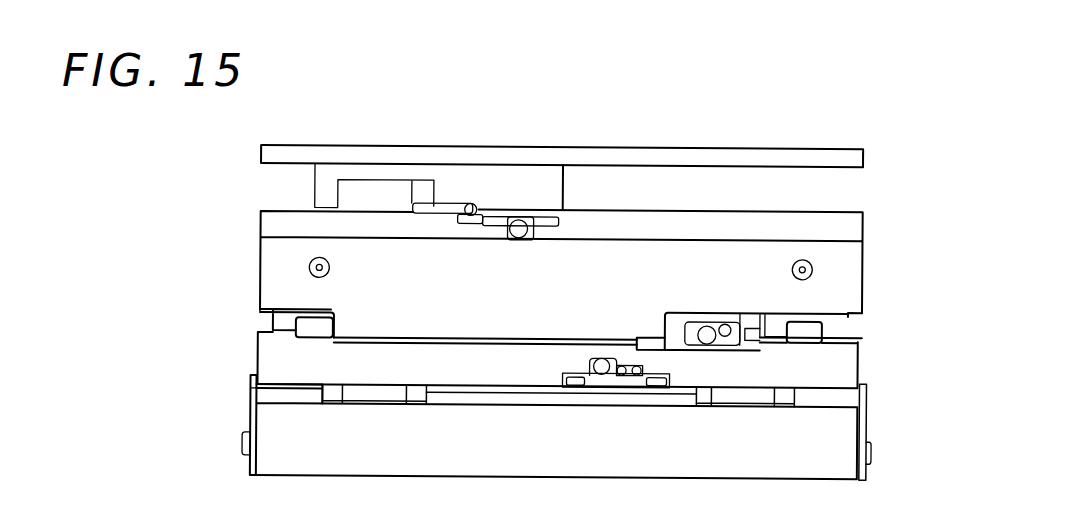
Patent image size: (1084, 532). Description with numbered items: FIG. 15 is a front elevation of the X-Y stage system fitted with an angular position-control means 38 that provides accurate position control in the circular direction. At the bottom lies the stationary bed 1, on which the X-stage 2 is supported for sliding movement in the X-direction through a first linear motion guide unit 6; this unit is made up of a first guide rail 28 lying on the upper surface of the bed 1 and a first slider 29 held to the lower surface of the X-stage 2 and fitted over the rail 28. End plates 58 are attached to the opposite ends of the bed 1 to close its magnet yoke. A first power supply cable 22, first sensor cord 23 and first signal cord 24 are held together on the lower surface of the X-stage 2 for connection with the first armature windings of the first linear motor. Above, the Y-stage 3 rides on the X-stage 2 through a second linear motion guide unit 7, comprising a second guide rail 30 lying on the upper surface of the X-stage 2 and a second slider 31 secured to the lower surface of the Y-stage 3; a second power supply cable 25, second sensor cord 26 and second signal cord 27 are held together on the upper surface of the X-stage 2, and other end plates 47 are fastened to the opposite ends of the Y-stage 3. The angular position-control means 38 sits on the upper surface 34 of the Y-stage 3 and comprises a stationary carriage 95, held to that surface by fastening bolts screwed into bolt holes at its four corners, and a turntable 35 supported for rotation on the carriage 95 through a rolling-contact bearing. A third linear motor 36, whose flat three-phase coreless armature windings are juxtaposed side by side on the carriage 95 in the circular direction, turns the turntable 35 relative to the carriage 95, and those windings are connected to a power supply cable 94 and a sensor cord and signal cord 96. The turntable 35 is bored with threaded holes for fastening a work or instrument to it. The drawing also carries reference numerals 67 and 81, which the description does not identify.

The stationary bed 1 is at (455, 455).
The X-stage 2 is at (330, 366).
The Y-stage 3 is at (826, 274).
The first linear motion guide unit 6 is at (349, 401).
The second linear motion guide unit 7 is at (268, 322).
The first power supply cable 22 is at (600, 372).
The first sensor cord 23 is at (621, 372).
The first signal cord 24 is at (638, 372).
The second power supply cable 25 is at (700, 327).
The second sensor cord 26 is at (722, 322).
The second signal cord 27 is at (742, 323).
The first guide rail 28 is at (523, 401).
The first slider 29 is at (374, 399).
The second guide rail 30 is at (312, 329).
The second slider 31 is at (272, 310).
The upper surface of the Y-stage 34 is at (634, 236).
The turntable 35 is at (610, 155).
The third linear motor 36 is at (486, 195).
The angular position-control means 38 is at (863, 144).
The end plates 47 is at (376, 277).
The end plates 58 is at (255, 412).
The stopper 67 is at (245, 448).
The screw 81 is at (308, 262).
The power supply cable 94 is at (519, 217).
The stationary carriage 95 is at (713, 223).
The signal cord 96 is at (466, 203).